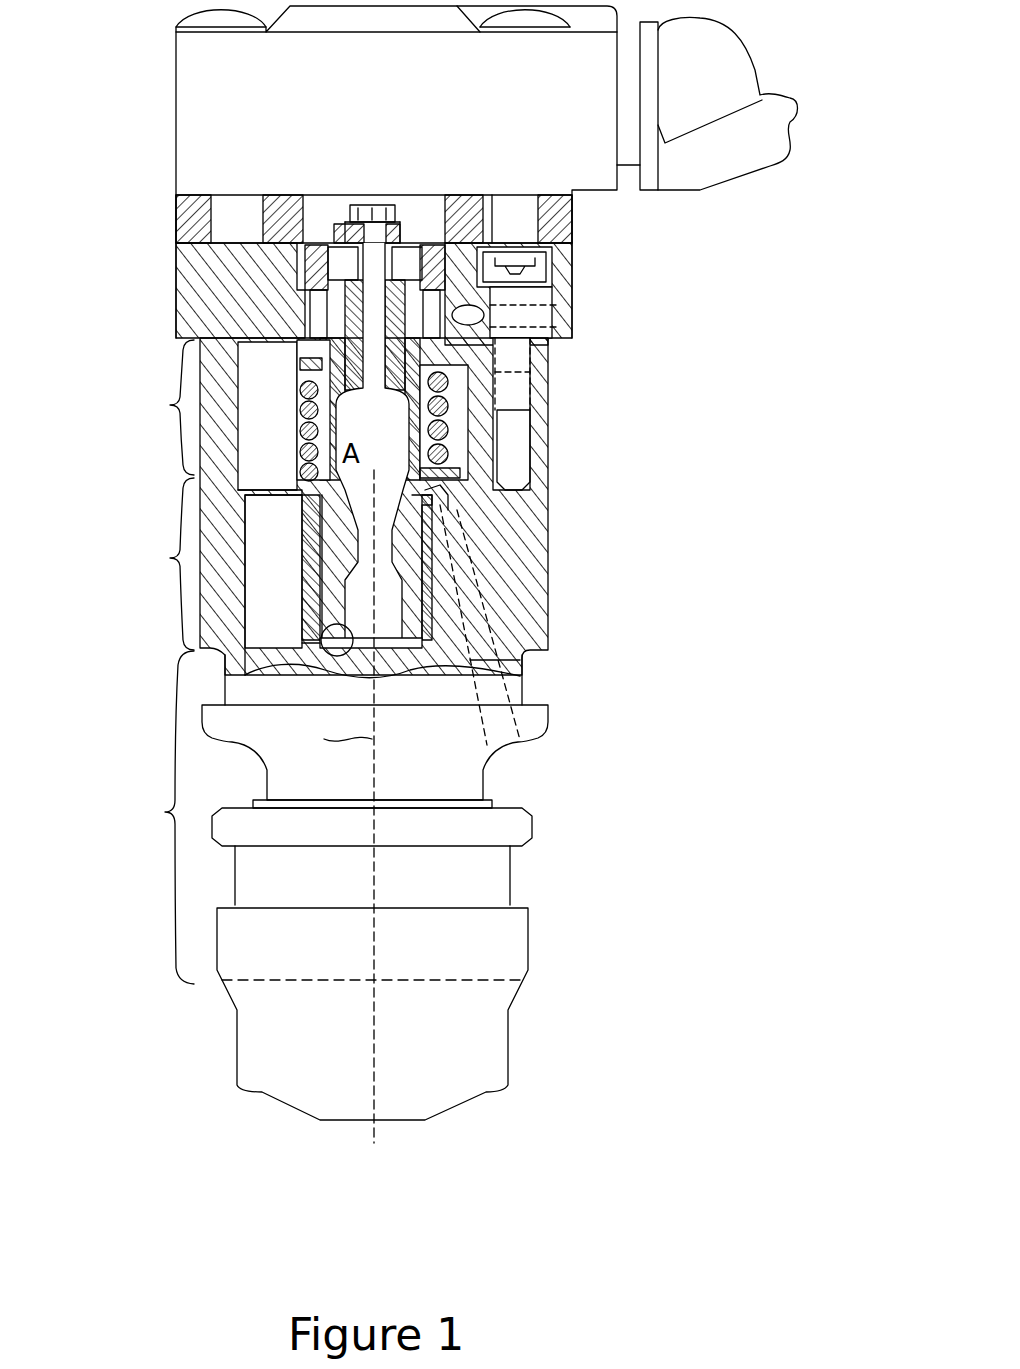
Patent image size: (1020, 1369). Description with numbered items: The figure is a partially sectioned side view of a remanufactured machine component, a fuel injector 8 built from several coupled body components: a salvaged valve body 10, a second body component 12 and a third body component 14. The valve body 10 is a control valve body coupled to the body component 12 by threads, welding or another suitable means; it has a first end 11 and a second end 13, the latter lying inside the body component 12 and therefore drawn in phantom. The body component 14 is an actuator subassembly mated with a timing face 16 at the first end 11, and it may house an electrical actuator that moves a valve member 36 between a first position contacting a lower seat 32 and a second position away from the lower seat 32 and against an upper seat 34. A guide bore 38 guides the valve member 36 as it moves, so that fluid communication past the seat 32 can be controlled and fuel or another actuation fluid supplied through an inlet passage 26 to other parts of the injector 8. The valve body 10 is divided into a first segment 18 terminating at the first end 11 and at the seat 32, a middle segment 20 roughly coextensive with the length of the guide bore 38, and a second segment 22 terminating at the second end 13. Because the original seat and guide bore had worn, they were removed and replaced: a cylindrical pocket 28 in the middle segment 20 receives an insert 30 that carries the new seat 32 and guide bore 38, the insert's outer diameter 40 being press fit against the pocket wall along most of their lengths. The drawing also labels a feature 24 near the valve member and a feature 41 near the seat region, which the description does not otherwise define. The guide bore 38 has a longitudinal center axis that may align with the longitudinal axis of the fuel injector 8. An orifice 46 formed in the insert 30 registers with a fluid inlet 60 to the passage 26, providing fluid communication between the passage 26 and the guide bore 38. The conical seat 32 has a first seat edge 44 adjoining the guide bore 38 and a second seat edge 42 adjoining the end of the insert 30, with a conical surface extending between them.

The fuel injector 8 is at (138, 686).
The salvaged valve body 10 is at (518, 577).
The first end 11 is at (545, 327).
The second body component 12 is at (505, 959).
The second end 13 is at (483, 989).
The third body component 14 is at (578, 240).
The timing face 16 is at (176, 335).
The first segment 18 is at (163, 407).
The middle segment 20 is at (163, 564).
The second segment 22 is at (163, 817).
The guide sleeve 24 is at (470, 449).
The inlet passage 26 is at (522, 669).
The cylindrical pocket 28 is at (432, 613).
The insert 30 is at (318, 599).
The lower seat 32 is at (462, 475).
The upper seat 34 is at (300, 387).
The valve member 36 is at (470, 397).
The guide bore 38 is at (310, 543).
The outer diameter 40 is at (308, 627).
The seat detail 41 is at (348, 673).
The second seat edge 42 is at (304, 505).
The first seat edge 44 is at (440, 513).
The orifice 46 is at (440, 539).
The fluid inlet 60 is at (362, 483).